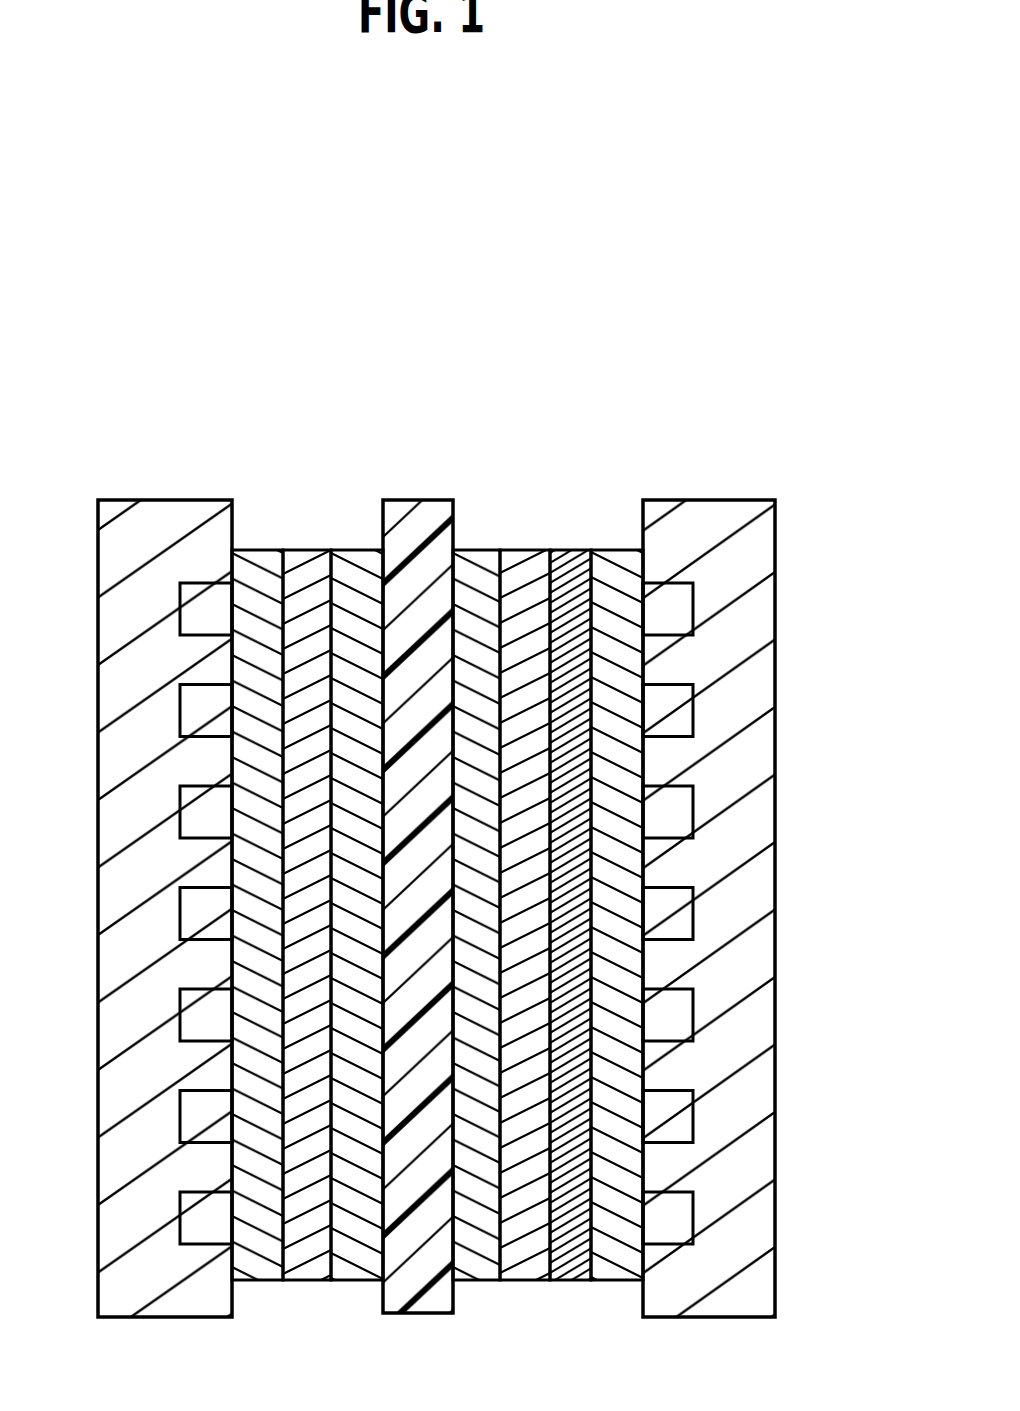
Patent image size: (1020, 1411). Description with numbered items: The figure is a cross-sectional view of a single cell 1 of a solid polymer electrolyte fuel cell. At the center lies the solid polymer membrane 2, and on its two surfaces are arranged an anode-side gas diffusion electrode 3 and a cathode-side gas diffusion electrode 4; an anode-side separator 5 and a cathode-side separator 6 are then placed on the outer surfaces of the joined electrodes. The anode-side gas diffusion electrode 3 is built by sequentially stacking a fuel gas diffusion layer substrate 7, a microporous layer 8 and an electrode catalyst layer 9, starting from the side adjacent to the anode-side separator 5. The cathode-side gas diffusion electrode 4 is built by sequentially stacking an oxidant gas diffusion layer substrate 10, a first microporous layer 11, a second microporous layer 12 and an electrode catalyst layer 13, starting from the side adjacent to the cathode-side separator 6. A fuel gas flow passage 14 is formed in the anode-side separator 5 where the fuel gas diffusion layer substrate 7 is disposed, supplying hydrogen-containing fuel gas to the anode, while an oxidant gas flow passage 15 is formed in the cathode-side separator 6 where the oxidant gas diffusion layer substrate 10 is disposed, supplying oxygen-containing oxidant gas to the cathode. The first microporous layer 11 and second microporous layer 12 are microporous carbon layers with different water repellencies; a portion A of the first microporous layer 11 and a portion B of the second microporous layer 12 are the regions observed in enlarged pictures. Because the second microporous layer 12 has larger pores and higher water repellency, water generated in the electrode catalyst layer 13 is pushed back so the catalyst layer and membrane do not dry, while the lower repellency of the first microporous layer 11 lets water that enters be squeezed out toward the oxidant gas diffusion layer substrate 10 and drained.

The single cell 1 is at (466, 778).
The solid polymer membrane 2 is at (418, 506).
The anode-side gas diffusion electrode 3 is at (310, 805).
The cathode-side gas diffusion electrode 4 is at (547, 804).
The anode-side separator 5 is at (157, 846).
The cathode-side separator 6 is at (709, 846).
The fuel gas diffusion layer substrate 7 is at (270, 553).
The microporous layer 8 is at (320, 553).
The electrode catalyst layer 9 is at (370, 553).
The oxidant gas diffusion layer substrate 10 is at (617, 834).
The first microporous layer 11 is at (576, 547).
The second microporous layer 12 is at (528, 547).
The electrode catalyst layer 13 is at (480, 547).
The fuel gas flow passage 14 is at (208, 595).
The oxidant gas flow passage 15 is at (678, 597).
The portion A is at (580, 663).
The portion B is at (533, 745).